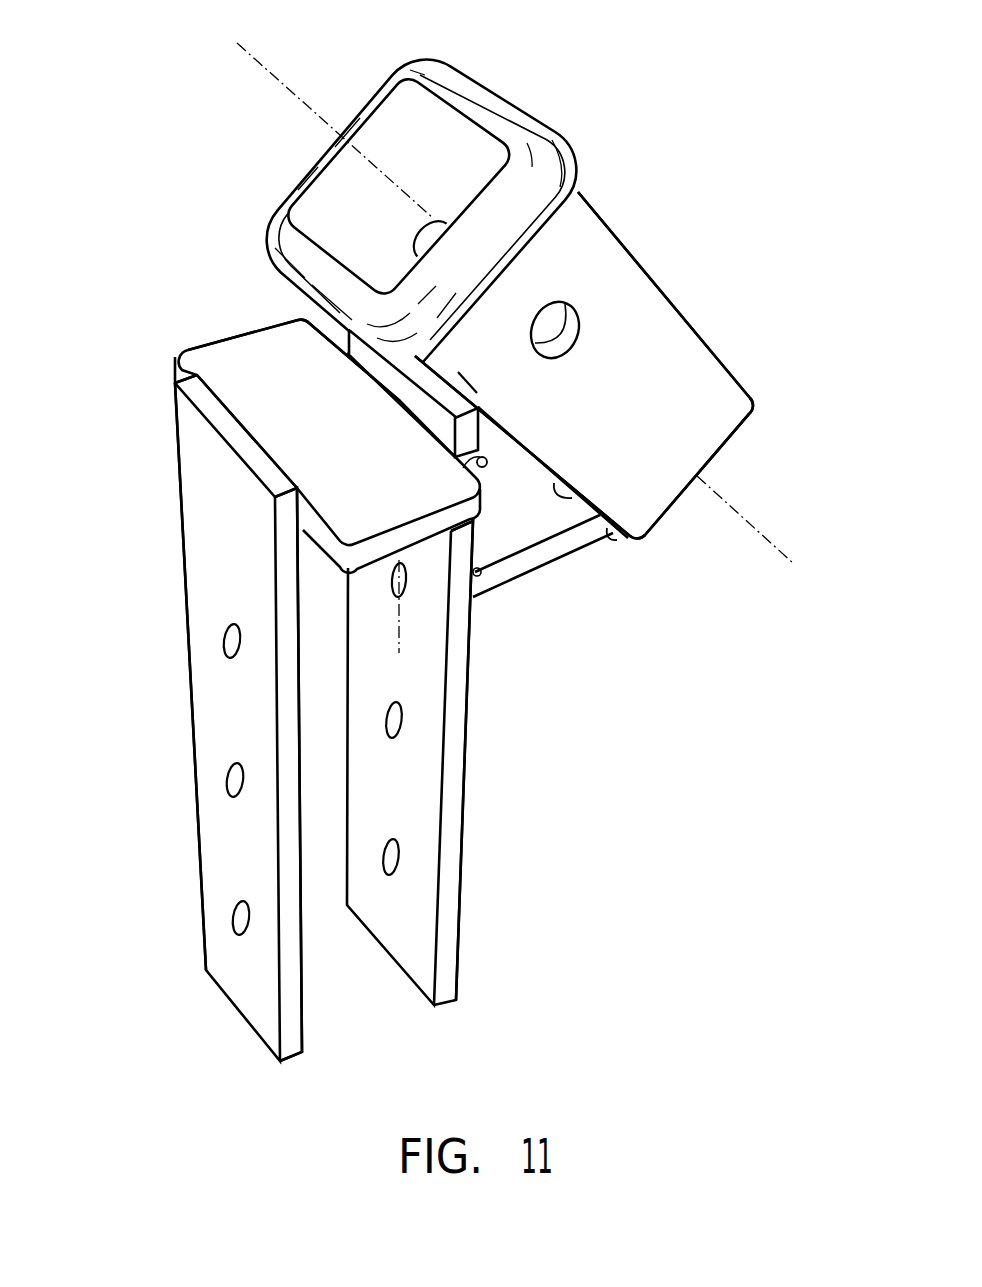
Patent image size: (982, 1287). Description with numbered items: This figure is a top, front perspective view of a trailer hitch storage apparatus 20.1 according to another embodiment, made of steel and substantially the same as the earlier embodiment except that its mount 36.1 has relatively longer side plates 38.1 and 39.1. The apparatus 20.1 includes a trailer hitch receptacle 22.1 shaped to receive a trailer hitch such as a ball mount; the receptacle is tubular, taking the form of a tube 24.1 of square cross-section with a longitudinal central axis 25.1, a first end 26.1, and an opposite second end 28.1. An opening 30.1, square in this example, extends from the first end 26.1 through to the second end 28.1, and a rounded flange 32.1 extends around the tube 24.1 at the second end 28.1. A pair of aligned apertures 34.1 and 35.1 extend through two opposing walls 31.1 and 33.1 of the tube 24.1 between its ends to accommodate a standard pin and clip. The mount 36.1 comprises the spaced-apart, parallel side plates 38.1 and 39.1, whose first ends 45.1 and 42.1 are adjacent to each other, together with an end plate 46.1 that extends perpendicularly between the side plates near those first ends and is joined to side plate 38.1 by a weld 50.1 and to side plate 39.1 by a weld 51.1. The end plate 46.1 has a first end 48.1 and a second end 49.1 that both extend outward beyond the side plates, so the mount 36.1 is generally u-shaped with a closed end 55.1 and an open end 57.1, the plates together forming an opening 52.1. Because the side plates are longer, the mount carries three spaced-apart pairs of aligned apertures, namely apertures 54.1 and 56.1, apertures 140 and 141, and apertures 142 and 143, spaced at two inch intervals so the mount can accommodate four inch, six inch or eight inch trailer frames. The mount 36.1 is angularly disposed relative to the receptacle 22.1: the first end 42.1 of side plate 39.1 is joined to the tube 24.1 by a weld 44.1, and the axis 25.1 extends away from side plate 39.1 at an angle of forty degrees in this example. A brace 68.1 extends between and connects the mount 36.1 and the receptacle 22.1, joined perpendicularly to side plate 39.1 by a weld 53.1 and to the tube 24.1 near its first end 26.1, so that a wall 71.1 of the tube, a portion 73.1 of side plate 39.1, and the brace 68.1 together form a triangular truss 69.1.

The trailer hitch storage apparatus 20.1 is at (166, 210).
The trailer hitch receptacle 22.1 is at (628, 245).
The tube 24.1 is at (657, 355).
The longitudinal central axis 25.1 is at (238, 44).
The first end 26.1 is at (745, 433).
The second end 28.1 is at (330, 164).
The opening 30.1 is at (440, 147).
The wall 31.1 is at (596, 279).
The rounded flange 32.1 is at (503, 104).
The wall 33.1 is at (426, 168).
The aperture 34.1 is at (545, 327).
The aperture 35.1 is at (425, 238).
The mount 36.1 is at (165, 531).
The side plate 38.1 is at (255, 574).
The side plate 39.1 is at (418, 818).
The first end 42.1 is at (433, 385).
The weld 44.1 is at (447, 393).
The first end 45.1 is at (230, 437).
The end plate 46.1 is at (324, 420).
The first end 48.1 is at (220, 335).
The second end 49.1 is at (480, 574).
The weld 50.1 is at (305, 494).
The weld 51.1 is at (372, 380).
The opening 52.1 is at (334, 990).
The weld 53.1 is at (487, 557).
The aperture 54.1 is at (226, 645).
The closed end 55.1 is at (172, 378).
The aperture 56.1 is at (405, 597).
The open end 57.1 is at (399, 1022).
The brace 68.1 is at (552, 528).
The truss 69.1 is at (540, 457).
The wall 71.1 is at (573, 498).
The portion 73.1 is at (480, 462).
The aperture 140 is at (230, 782).
The aperture 141 is at (397, 738).
The aperture 142 is at (235, 920).
The aperture 143 is at (395, 876).